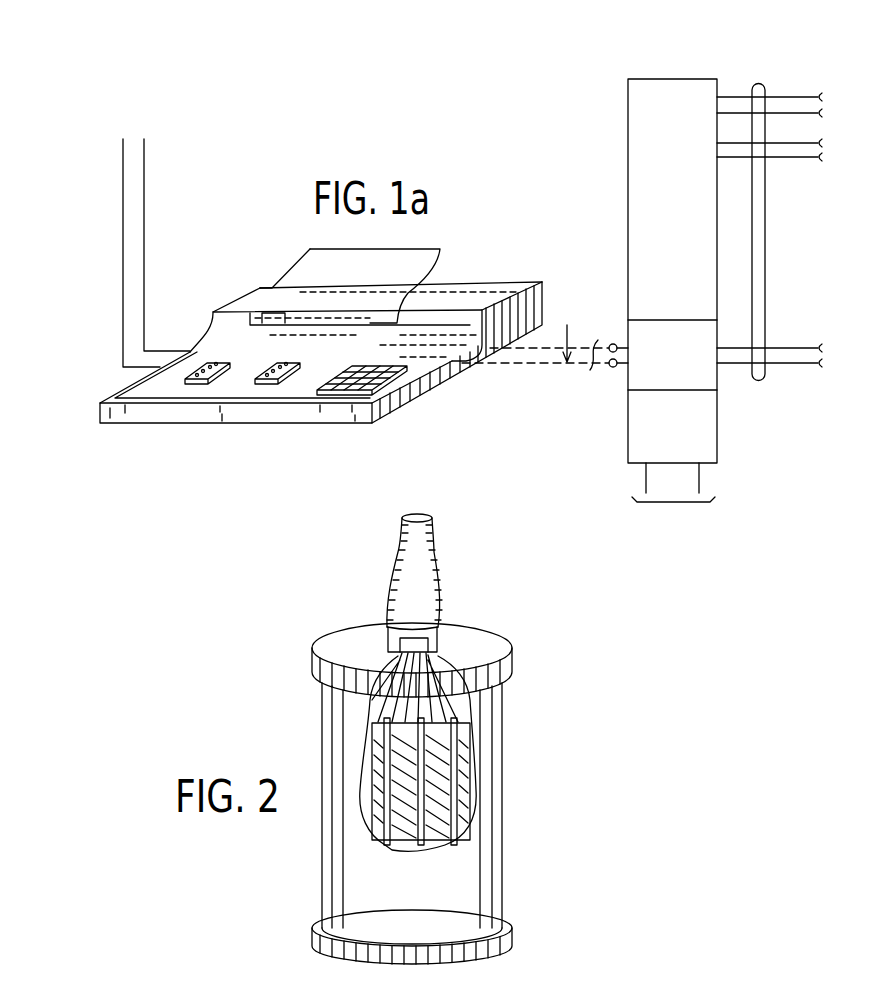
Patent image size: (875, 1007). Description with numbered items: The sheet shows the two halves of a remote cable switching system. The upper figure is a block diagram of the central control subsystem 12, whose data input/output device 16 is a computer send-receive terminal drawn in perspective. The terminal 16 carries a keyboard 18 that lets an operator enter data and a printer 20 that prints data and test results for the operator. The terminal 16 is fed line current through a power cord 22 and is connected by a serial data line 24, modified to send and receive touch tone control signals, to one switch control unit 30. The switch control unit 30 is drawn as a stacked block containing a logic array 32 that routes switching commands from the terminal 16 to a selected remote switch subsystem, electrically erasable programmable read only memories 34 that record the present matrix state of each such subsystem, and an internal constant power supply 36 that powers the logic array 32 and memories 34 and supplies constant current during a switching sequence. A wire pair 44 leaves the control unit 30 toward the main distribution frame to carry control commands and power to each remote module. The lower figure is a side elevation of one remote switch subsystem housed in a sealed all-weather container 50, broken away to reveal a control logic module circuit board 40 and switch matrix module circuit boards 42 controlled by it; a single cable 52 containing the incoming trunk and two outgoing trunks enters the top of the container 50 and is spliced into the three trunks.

In FIG. 1A, the central control subsystem 12 is at (352, 298).
In FIG. 1A, the data input/output device 16 is at (300, 415).
In FIG. 1A, the keyboard 18 is at (383, 373).
In FIG. 1A, the printer 20 is at (312, 318).
In FIG. 1A, the power cord 22 is at (103, 133).
In FIG. 1A, the serial data line 24 is at (535, 367).
In FIG. 1A, the switch control unit 30 is at (646, 309).
In FIG. 1A, the logic array 32 is at (685, 284).
In FIG. 1A, the electrically erasable programmable read only memories 34 is at (685, 367).
In FIG. 1A, the internal constant power supply 36 is at (685, 438).
In FIG. 1A, the wire pair 44 is at (823, 325).
In FIG. 2, the control logic module 40 is at (367, 752).
In FIG. 2, the switch matrix modules 42 is at (443, 785).
In FIG. 2, the sealed all-weather container 50 is at (482, 855).
In FIG. 2, the cable 52 is at (417, 585).